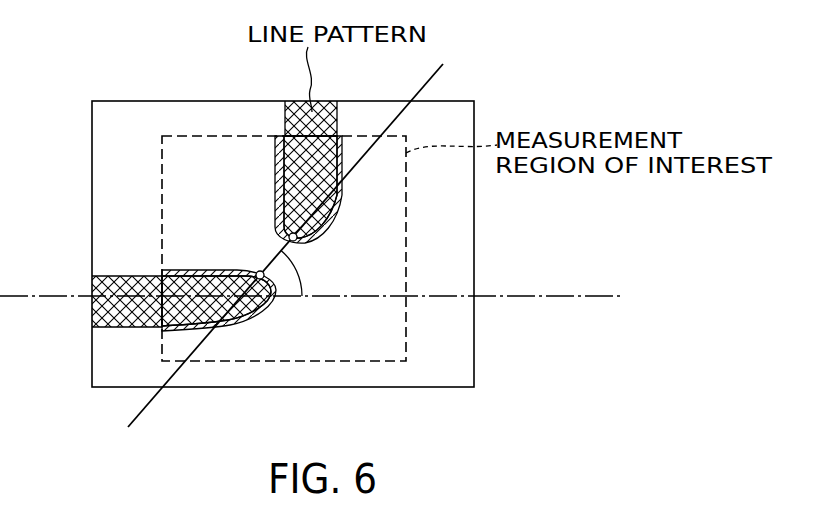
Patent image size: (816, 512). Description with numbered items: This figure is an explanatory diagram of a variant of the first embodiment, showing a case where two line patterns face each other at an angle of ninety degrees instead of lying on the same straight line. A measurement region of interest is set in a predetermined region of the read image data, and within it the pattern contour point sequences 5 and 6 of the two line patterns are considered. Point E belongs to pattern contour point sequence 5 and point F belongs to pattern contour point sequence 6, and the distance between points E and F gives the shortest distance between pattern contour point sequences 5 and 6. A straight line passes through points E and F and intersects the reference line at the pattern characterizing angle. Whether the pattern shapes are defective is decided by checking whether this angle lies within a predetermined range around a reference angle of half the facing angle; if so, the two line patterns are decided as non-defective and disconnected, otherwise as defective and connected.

The pattern contour point sequence 5 is at (200, 268).
The pattern contour point sequence 6 is at (277, 157).
The point E is at (289, 236).
The point F is at (258, 270).